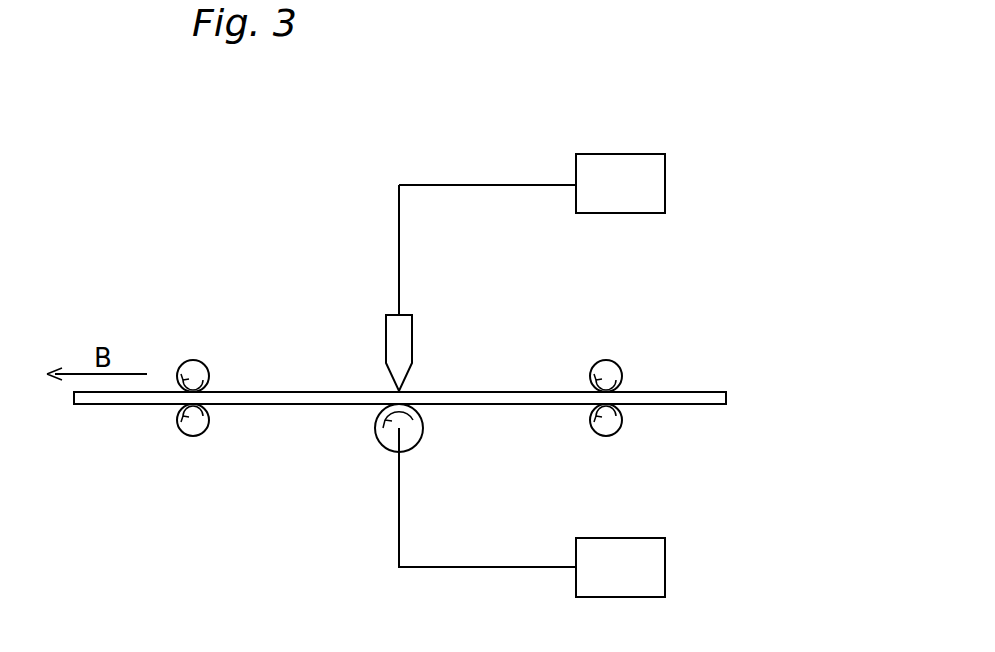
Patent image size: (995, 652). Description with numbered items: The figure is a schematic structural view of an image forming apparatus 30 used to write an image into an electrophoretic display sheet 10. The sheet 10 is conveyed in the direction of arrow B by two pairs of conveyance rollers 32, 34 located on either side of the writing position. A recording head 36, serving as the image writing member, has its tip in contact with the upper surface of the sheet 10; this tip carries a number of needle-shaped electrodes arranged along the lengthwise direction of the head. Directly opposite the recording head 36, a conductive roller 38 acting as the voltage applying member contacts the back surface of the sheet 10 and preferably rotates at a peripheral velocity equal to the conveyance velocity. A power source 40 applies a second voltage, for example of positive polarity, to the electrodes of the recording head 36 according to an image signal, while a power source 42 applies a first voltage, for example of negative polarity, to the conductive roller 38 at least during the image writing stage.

The image forming apparatus 30 is at (226, 171).
The electrophoretic display sheet 10 is at (277, 391).
The conveyance roller 32 is at (193, 358).
The conveyance roller 34 is at (606, 358).
The recording head 36 is at (412, 342).
The conductive roller 38 is at (420, 441).
The power source 40 is at (615, 154).
The power source 42 is at (627, 538).